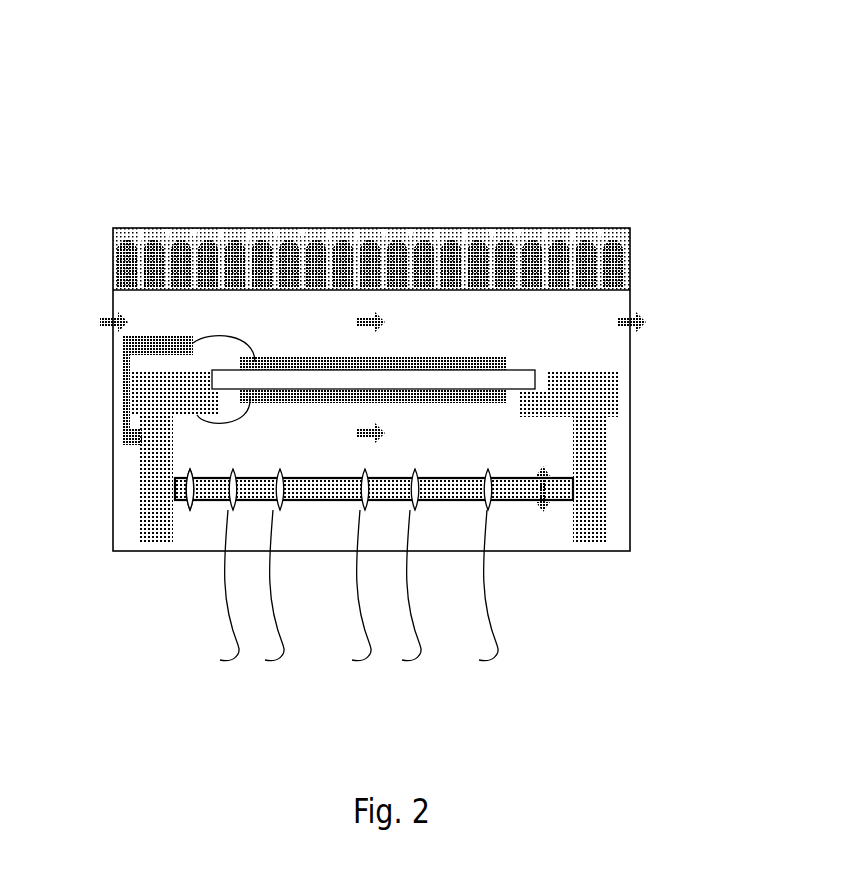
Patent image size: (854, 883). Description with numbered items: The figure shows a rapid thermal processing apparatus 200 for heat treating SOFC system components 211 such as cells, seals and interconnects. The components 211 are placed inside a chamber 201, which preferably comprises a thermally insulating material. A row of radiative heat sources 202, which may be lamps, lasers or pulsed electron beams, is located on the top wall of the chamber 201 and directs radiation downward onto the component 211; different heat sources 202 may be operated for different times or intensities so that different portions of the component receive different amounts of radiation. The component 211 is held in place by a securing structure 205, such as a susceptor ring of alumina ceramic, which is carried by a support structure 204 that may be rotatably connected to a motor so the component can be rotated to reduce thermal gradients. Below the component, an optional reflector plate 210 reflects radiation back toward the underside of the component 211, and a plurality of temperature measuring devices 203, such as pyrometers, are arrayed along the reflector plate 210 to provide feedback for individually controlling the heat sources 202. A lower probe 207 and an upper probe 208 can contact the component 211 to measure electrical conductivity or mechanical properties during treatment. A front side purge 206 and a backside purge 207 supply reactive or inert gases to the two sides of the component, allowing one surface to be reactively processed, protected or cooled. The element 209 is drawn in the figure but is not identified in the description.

The rapid thermal processing apparatus 200 is at (373, 205).
The chamber 201 is at (463, 228).
The radiative heat sources 202 is at (622, 228).
The temperature measuring devices 203 is at (492, 515).
The support structure 204 is at (590, 470).
The securing structure 205 is at (607, 380).
The front side purge 206 is at (118, 326).
The lower probe 207 is at (192, 476).
The upper probe 208 is at (197, 345).
The side support 209 is at (197, 422).
The reflector plate 210 is at (407, 503).
The SOFC system components 211 is at (518, 353).